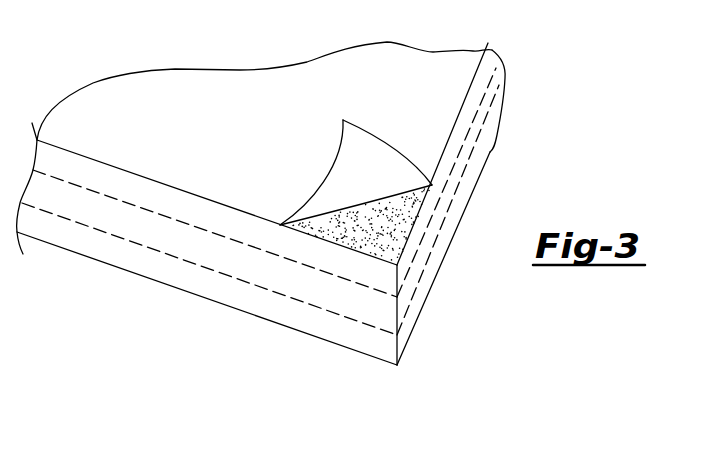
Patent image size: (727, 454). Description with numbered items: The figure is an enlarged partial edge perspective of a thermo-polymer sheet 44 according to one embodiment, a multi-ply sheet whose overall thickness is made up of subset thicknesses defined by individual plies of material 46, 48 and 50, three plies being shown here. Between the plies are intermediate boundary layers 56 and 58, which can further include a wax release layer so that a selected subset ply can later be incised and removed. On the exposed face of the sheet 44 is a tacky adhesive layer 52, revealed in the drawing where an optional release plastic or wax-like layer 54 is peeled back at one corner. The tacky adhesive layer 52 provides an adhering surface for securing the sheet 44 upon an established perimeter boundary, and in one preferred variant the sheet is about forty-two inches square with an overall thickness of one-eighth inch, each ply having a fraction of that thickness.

The thermo-polymer sheet 44 is at (166, 42).
The ply of material 46 is at (495, 70).
The ply of material 48 is at (493, 94).
The ply of material 50 is at (492, 150).
The tacky adhesive layer 52 is at (387, 234).
The release wax layer 54 is at (359, 143).
The intermediate boundary layer 56 is at (333, 275).
The intermediate boundary layer 58 is at (333, 310).